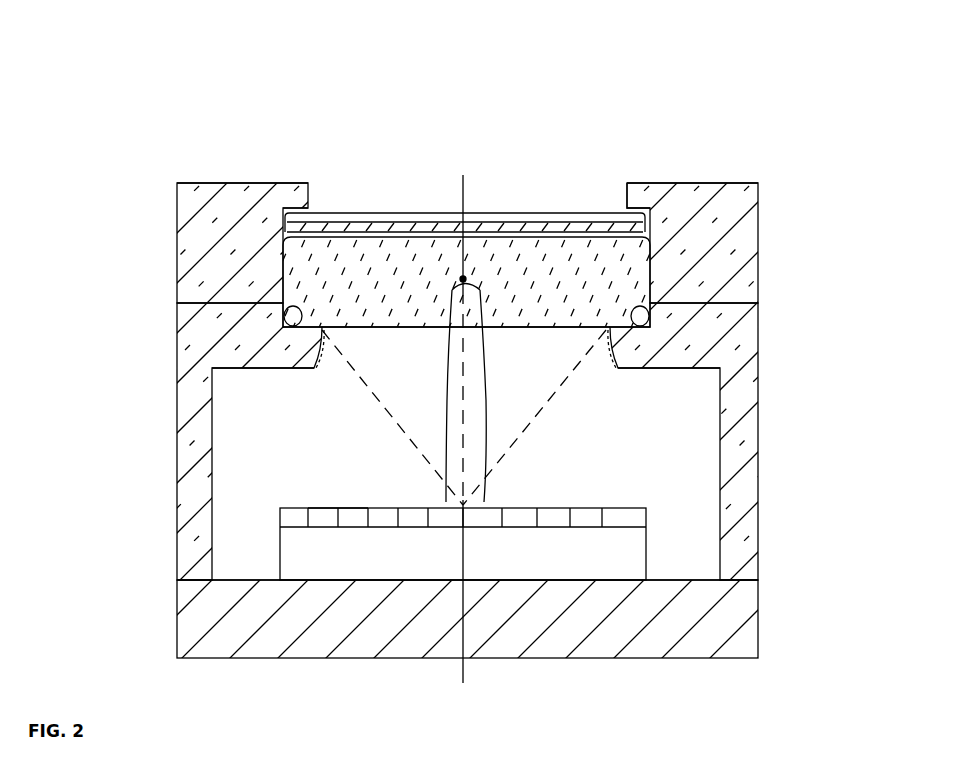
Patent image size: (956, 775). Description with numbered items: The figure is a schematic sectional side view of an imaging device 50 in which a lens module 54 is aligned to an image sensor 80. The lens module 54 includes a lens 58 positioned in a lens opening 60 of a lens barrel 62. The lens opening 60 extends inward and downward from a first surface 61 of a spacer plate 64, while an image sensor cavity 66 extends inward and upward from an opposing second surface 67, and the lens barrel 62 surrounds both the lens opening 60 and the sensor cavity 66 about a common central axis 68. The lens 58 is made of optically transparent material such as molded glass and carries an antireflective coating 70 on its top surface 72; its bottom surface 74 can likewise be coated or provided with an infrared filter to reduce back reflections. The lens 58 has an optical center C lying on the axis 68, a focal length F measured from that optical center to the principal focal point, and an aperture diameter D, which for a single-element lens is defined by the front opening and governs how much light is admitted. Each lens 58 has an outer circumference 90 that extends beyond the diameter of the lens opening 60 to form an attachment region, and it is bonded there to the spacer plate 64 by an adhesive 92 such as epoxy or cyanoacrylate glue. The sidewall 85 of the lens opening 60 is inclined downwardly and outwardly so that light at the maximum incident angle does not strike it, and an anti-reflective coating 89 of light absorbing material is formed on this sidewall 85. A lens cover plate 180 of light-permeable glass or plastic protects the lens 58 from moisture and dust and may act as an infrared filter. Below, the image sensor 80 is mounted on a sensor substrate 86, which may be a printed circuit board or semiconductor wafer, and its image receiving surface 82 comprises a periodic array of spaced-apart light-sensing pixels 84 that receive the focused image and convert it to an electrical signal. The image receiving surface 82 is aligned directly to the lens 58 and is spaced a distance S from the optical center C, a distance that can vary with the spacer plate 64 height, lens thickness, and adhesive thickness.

The imaging device 50 is at (795, 72).
The lens module 54 is at (144, 201).
The lens 58 is at (664, 255).
The lens opening 60 is at (574, 357).
The first surface 61 is at (750, 179).
The lens barrel 62 is at (784, 259).
The spacer plate 64 is at (758, 500).
The image sensor cavity 66 is at (589, 448).
The second surface 67 is at (740, 583).
The central axis 68 is at (463, 683).
The antireflective coating 70 is at (354, 232).
The top surface 72 is at (547, 232).
The bottom surface 74 is at (422, 334).
The image sensor 80 is at (380, 558).
The image receiving surface 82 is at (574, 507).
The light-sensing pixels 84 is at (353, 513).
The sidewall 85 is at (606, 370).
The sensor substrate 86 is at (362, 618).
The anti-reflective coating 89 is at (318, 372).
The outer circumference 90 is at (628, 338).
The adhesive 92 is at (289, 316).
The lens cover plate 180 is at (284, 222).
The aperture diameter D is at (652, 180).
The optical center C is at (468, 278).
The focal length F is at (486, 394).
The distance S is at (444, 410).